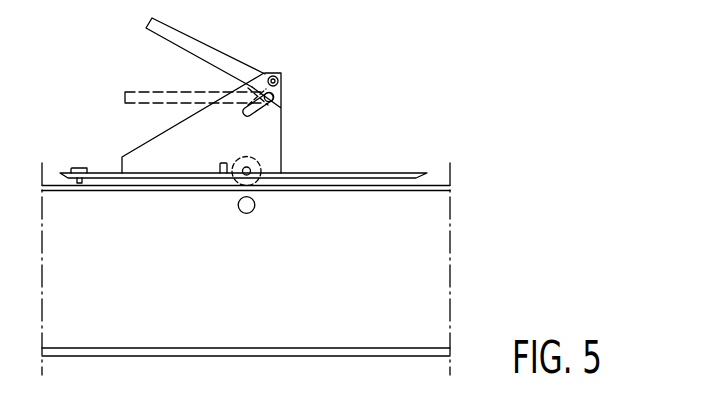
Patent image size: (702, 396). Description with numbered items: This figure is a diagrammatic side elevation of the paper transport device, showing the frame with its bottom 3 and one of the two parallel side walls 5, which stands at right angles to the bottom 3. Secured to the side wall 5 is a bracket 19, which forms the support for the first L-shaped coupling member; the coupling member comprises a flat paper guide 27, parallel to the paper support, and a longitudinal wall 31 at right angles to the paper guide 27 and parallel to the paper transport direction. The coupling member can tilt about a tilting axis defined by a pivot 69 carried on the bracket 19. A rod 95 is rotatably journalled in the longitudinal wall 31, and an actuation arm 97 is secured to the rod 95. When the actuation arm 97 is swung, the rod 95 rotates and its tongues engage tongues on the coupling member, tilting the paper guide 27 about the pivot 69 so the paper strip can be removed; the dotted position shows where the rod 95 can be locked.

The actuation arm 97 is at (161, 31).
The rod 95 is at (280, 83).
The longitudinal wall 31 is at (265, 133).
The flat paper guide 27 is at (296, 177).
The pivot 69 is at (78, 168).
The bracket 19 is at (172, 191).
The side wall 5 is at (425, 267).
The bottom 3 is at (86, 357).